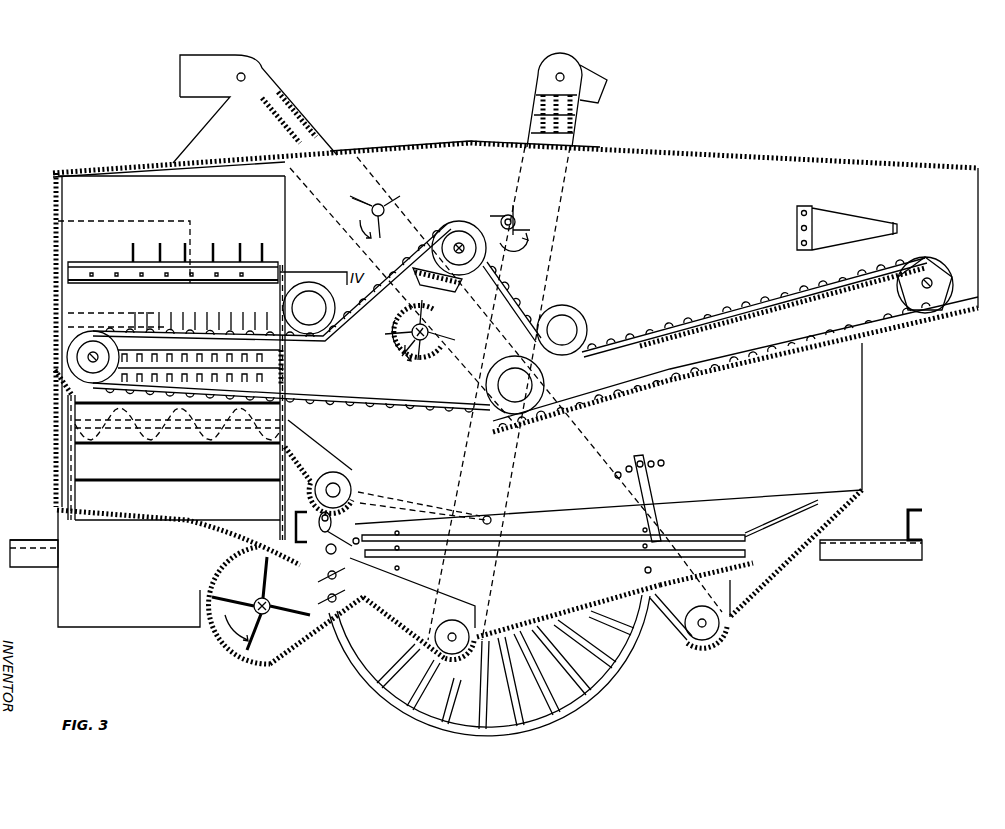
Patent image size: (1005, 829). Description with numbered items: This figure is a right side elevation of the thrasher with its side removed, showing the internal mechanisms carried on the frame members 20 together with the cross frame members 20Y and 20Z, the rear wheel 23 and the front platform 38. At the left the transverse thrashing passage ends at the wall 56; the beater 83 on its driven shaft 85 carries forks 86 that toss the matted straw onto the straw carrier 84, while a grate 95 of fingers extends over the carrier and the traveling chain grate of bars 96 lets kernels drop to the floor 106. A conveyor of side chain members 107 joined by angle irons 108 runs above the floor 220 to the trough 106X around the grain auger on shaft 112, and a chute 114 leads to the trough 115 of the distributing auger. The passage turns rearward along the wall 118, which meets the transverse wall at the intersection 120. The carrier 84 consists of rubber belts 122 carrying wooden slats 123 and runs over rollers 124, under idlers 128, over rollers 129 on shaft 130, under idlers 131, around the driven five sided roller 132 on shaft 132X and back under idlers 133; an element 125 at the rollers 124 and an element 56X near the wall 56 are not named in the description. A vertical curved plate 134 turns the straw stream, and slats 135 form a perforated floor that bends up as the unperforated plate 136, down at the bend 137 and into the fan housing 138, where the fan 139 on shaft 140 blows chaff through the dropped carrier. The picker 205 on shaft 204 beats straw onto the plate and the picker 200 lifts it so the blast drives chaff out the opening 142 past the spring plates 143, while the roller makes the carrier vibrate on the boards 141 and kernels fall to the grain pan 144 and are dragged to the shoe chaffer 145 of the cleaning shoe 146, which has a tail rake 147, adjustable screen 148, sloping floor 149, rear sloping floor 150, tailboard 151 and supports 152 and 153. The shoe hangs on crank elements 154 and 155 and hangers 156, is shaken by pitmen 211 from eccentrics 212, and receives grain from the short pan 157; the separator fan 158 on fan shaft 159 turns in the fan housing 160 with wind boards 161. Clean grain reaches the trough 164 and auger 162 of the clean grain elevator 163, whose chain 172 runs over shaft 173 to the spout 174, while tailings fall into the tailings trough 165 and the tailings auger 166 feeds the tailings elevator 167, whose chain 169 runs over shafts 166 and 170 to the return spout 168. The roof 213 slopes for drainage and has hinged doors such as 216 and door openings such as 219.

The frame members 20 is at (466, 553).
The cross frame member 20Y is at (925, 525).
The cross frame member 20Z is at (294, 527).
The rear wheel 23 is at (614, 693).
The front platform 38 is at (32, 538).
The wall 56 is at (55, 470).
The elevator chute 56X is at (62, 382).
The beater 83 is at (173, 284).
The straw carrier 84 is at (530, 296).
The driven shaft 85 is at (60, 292).
The forks 86 is at (222, 243).
The grate 95 is at (250, 320).
The bars 96 is at (285, 368).
The floor 106 is at (177, 504).
The trough 106X is at (238, 435).
The side chain members 107 is at (78, 475).
The angle irons 108 is at (152, 480).
The shaft 112 is at (66, 436).
The chute 114 is at (318, 480).
The trough 115 is at (375, 485).
The wall 118 is at (751, 361).
The intersection 120 is at (287, 240).
The rubber belts 122 is at (645, 380).
The wooden slats 123 is at (405, 410).
The rollers 124 is at (75, 356).
The shaft 125 is at (90, 355).
The idlers 128 is at (309, 308).
The rollers 129 is at (458, 243).
The shaft 130 is at (460, 246).
The idlers 131 is at (562, 330).
The five sided roller 132 is at (905, 292).
The driven shaft 132X is at (928, 278).
The idlers 133 is at (515, 385).
The vertical curved plate 134 is at (137, 220).
The slats 135 is at (143, 330).
The unperforated plate 136 is at (326, 338).
The bend 137 is at (430, 280).
The fan housing 138 is at (395, 350).
The fan 139 is at (402, 356).
The fan shaft 140 is at (420, 347).
The boards 141 is at (742, 312).
The opening 142 is at (960, 238).
The spring plates 143 is at (847, 228).
The grain pan 144 is at (718, 375).
The shoe chaffer 145 is at (520, 542).
The cleaning shoe 146 is at (608, 510).
The tail rake 147 is at (795, 510).
The adjustable screen 148 is at (545, 552).
The sloping floor 149 is at (538, 612).
The sloping floor 150 is at (775, 566).
The tailboard 151 is at (848, 510).
The adjustable support 152 is at (400, 548).
The adjustable support 153 is at (645, 572).
The crank element 154 is at (322, 549).
The crank element 155 is at (419, 502).
The hangers 156 is at (656, 490).
The short pan 157 is at (422, 508).
The separator fan 158 is at (262, 645).
The fan shaft 159 is at (264, 599).
The fan housing 160 is at (275, 665).
The wind boards 161 is at (345, 596).
The auger 162 is at (460, 656).
The clean grain elevator 163 is at (545, 62).
The trough 164 is at (445, 662).
The tailings trough 165 is at (700, 640).
The tailings auger 166 is at (690, 640).
The tailings elevator 167 is at (207, 58).
The return spout 168 is at (178, 117).
The elevating mechanism 169 is at (296, 105).
The shaft 170 is at (245, 72).
The elevating mechanism 172 is at (575, 123).
The shaft 173 is at (560, 70).
The spout 174 is at (604, 72).
The picker 200 is at (515, 222).
The picker shaft 204 is at (380, 204).
The picker 205 is at (362, 200).
The pitmen 211 is at (468, 518).
The eccentrics 212 is at (336, 485).
The roof 213 is at (690, 150).
The hinged door 216 is at (368, 150).
The door opening 219 is at (90, 172).
The floor 220 is at (129, 568).